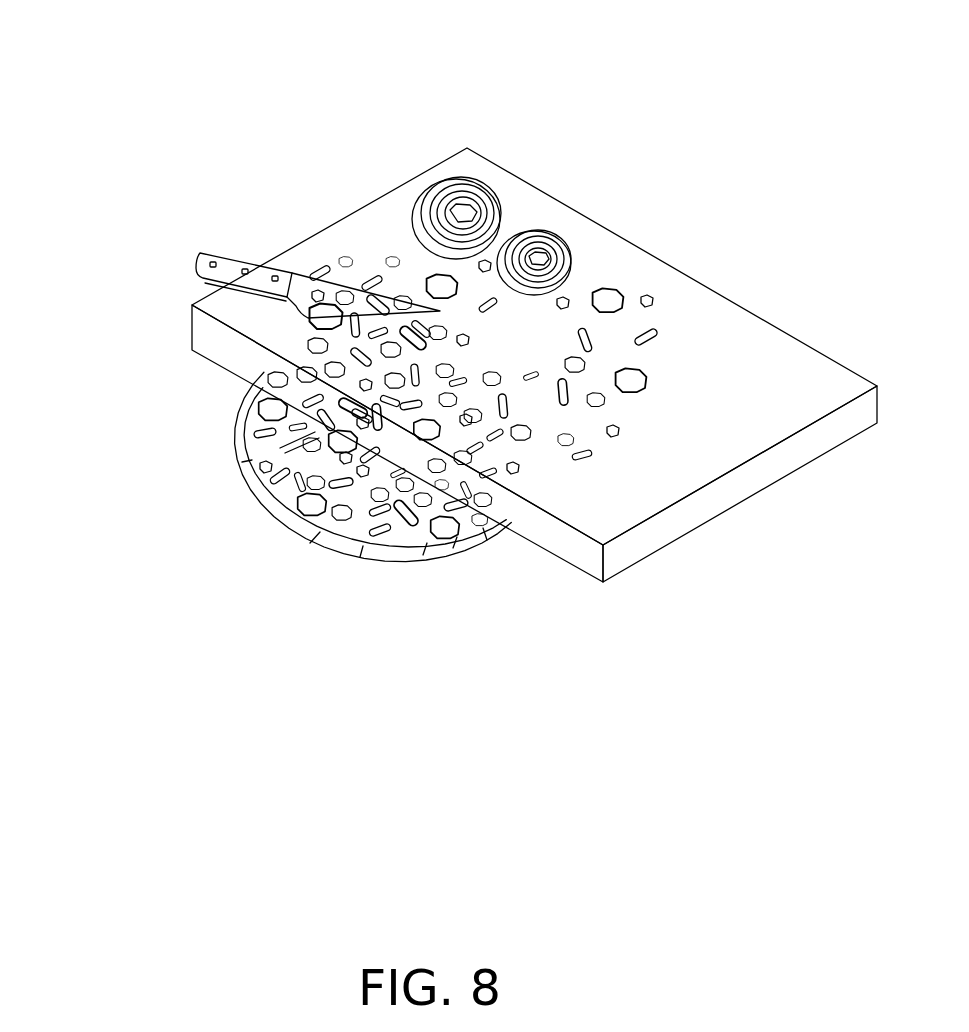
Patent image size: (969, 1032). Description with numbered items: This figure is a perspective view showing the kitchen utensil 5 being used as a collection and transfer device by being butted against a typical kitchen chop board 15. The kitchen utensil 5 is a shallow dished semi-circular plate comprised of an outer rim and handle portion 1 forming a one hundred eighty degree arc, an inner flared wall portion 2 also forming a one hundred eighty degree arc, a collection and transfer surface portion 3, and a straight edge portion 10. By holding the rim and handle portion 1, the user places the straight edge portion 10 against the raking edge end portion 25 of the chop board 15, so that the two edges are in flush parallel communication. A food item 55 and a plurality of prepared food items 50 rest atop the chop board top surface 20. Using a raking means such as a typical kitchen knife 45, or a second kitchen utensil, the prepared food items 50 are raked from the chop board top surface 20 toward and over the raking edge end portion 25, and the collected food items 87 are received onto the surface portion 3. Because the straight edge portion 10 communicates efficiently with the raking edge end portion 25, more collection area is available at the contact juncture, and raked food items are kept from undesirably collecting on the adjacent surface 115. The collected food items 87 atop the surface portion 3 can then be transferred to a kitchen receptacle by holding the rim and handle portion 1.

The outer rim and handle portion 1 is at (399, 598).
The inner flared wall portion 2 is at (237, 512).
The collection and transfer surface portion 3 is at (310, 458).
The kitchen utensil 5 is at (287, 542).
The straight edge portion 10 is at (390, 455).
The kitchen chop board 15 is at (534, 422).
The chop board top surface 20 is at (782, 413).
The raking edge end portion 25 is at (562, 559).
The kitchen knife 45 is at (233, 257).
The prepared food items 50 is at (312, 347).
The food item 55 is at (465, 177).
The collected food items 87 is at (247, 397).
The adjacent surface 115 is at (567, 616).